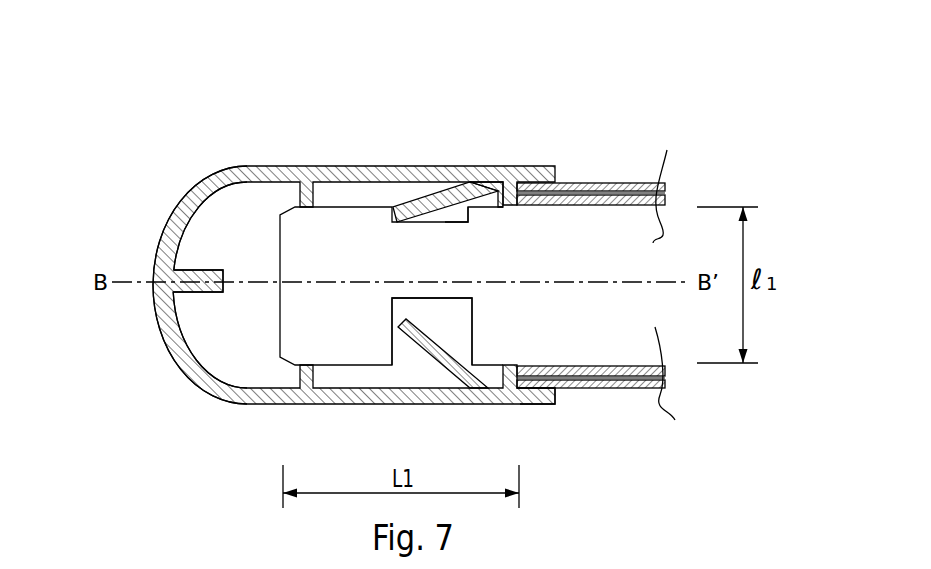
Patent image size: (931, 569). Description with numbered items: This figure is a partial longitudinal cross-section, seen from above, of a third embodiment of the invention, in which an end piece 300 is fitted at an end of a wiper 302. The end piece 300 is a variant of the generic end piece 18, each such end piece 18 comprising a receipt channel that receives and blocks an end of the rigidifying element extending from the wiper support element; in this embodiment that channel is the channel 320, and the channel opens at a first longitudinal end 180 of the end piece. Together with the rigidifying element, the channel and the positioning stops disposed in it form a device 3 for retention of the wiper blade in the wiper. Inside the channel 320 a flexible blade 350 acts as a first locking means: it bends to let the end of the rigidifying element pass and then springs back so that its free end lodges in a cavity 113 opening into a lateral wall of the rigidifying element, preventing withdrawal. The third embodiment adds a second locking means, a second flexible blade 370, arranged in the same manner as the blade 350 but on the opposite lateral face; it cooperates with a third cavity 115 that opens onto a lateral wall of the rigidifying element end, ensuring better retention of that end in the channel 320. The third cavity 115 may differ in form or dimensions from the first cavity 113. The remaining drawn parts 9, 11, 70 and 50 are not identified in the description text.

The device for retention of the wiper blade 3 is at (509, 118).
The wiper 302 is at (604, 140).
The outer tube 9 is at (622, 183).
The inner tube 11 is at (640, 200).
The end piece 18 is at (155, 254).
The end piece 300 is at (155, 199).
The channel 320 is at (221, 324).
The second flexible blade 370 is at (418, 204).
The third cavity 115 is at (430, 222).
The light exit surface 70 is at (461, 210).
The cavity 113 is at (452, 325).
The flexible blade 350 is at (419, 350).
The deflecting element 50 is at (449, 388).
The first longitudinal end 180 is at (565, 418).